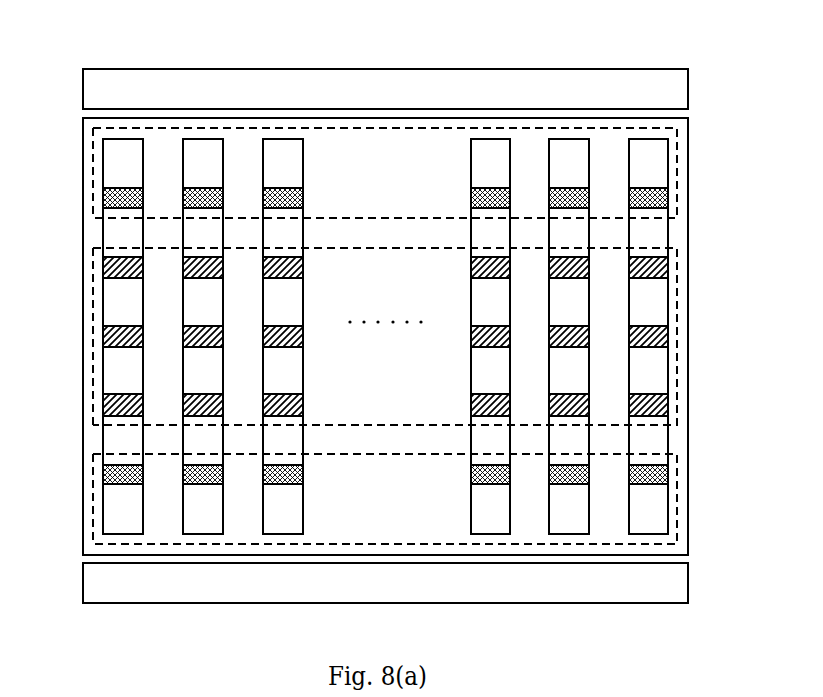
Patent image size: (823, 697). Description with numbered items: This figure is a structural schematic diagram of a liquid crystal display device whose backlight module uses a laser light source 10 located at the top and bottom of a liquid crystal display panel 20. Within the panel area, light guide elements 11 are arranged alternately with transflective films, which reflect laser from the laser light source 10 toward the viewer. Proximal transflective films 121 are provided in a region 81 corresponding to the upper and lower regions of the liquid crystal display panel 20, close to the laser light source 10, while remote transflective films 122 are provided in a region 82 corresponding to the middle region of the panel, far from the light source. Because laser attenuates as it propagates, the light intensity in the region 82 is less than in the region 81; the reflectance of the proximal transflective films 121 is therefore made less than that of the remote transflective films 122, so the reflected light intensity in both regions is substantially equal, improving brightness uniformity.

The laser light source 10 is at (640, 69).
The light guide element 11 is at (658, 150).
The liquid crystal display panel 20 is at (689, 443).
The proximal transflective film 121 is at (670, 195).
The remote transflective film 122 is at (667, 333).
The region 81 is at (93, 168).
The region 82 is at (93, 327).